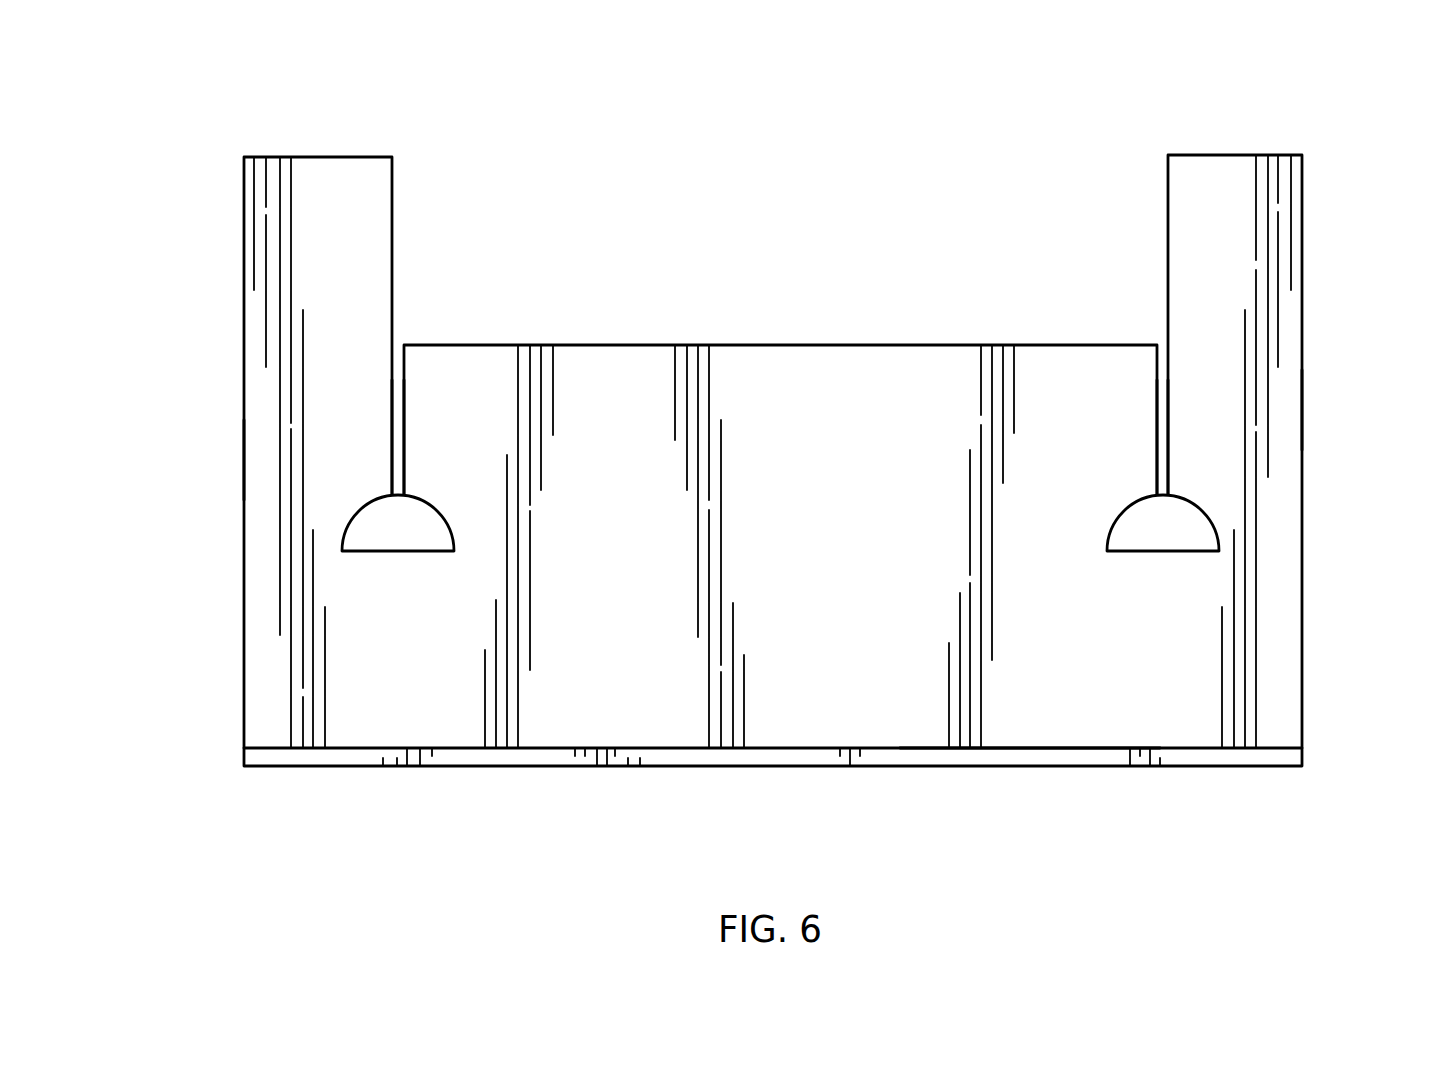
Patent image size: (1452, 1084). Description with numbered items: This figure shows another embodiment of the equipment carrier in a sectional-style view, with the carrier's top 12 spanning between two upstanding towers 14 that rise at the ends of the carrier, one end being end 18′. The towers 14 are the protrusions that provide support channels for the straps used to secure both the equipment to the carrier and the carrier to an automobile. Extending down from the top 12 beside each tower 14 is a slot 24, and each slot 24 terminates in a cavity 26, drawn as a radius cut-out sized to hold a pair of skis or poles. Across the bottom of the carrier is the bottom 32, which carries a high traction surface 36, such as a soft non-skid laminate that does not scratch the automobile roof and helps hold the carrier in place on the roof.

The top 12 is at (818, 344).
The tower 14 is at (374, 156).
The end 18′ is at (1320, 410).
The slot 24 is at (404, 403).
The cavity 26 is at (370, 552).
The bottom 32 is at (922, 783).
The high traction surface 36 is at (1023, 748).